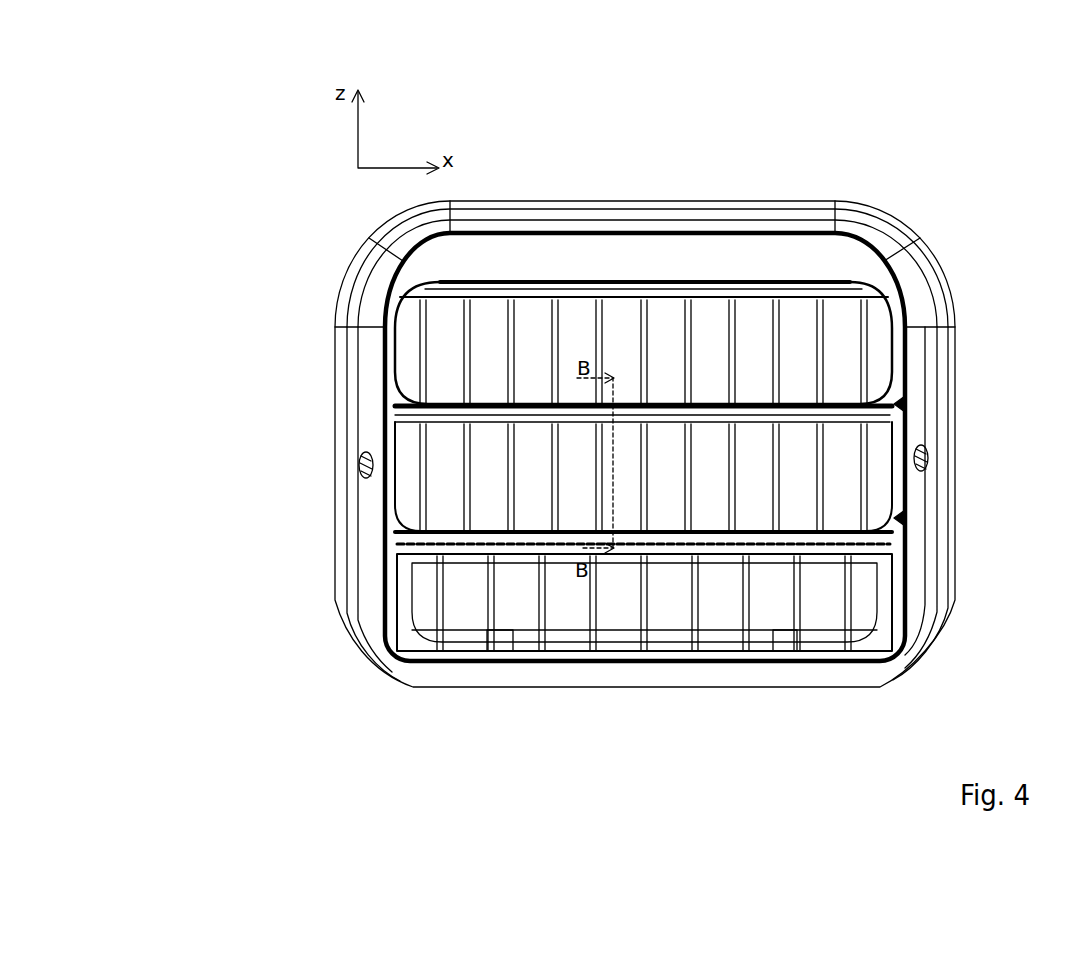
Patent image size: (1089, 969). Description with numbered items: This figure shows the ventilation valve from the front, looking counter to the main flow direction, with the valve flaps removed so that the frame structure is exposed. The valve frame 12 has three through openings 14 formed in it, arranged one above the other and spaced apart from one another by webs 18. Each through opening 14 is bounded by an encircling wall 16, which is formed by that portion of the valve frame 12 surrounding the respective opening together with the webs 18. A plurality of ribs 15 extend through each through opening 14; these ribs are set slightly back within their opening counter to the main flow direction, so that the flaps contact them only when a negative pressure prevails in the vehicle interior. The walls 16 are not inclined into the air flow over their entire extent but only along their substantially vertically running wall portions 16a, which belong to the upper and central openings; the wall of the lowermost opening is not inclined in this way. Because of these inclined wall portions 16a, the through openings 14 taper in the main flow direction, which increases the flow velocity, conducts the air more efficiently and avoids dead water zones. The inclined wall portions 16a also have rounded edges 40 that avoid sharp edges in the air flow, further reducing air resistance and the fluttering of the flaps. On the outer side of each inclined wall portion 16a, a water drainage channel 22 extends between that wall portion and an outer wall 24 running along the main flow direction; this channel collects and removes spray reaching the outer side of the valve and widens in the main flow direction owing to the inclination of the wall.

The valve frame 12 is at (733, 213).
The through opening 14 is at (677, 361).
The rib 15 is at (560, 442).
The wall 16 is at (412, 664).
The wall portion 16a is at (393, 353).
The web 18 is at (475, 525).
The water drainage channel 22 is at (392, 468).
The outer wall 24 is at (388, 522).
The rounded edge 40 is at (903, 403).